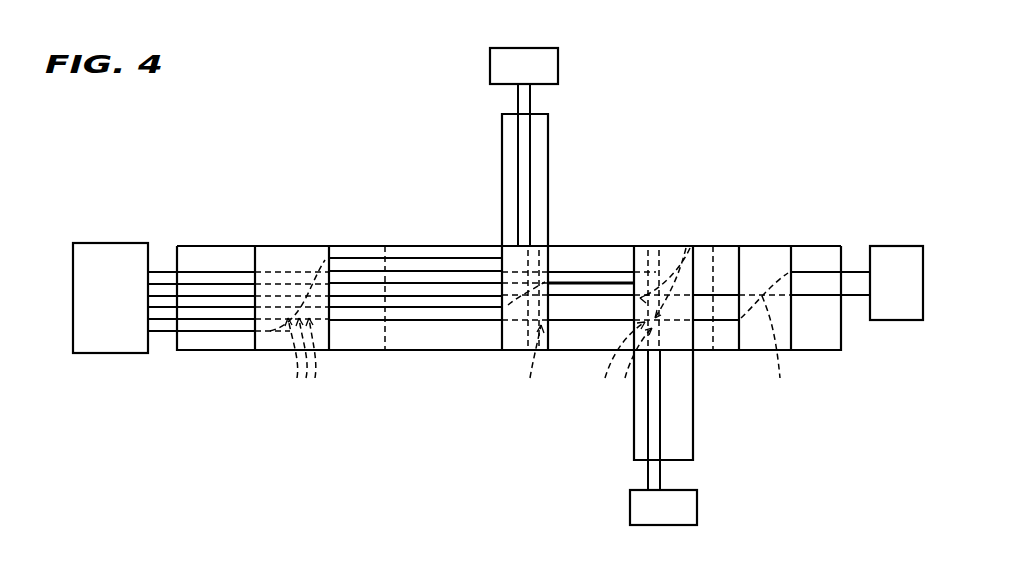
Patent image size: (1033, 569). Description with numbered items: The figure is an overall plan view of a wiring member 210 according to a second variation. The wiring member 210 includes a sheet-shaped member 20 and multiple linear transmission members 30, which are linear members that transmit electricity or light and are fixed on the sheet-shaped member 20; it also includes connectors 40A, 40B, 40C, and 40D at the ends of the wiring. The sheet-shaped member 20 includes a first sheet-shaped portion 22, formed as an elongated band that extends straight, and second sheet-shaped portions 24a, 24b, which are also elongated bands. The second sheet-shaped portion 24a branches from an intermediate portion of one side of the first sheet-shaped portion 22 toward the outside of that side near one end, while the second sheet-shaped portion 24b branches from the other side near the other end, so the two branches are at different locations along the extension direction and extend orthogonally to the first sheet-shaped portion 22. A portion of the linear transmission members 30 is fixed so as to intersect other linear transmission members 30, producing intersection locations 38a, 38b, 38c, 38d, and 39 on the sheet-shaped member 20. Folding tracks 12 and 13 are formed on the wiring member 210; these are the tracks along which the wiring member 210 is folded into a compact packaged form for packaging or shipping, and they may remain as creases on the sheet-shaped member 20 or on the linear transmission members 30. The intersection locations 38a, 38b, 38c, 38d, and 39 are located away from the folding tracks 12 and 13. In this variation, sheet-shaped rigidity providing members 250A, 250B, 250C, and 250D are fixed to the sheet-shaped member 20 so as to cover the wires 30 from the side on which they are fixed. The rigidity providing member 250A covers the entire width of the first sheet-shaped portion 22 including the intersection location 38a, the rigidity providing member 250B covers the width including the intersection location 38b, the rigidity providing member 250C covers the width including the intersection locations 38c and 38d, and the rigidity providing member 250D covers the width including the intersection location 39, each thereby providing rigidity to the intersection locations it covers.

The wiring member 210 is at (383, 87).
The connector 40A is at (152, 242).
The connector 40B is at (558, 65).
The connector 40C is at (697, 508).
The connector 40D is at (897, 321).
The linear transmission member 30 is at (197, 270).
The rigidity providing member 250A is at (282, 252).
The rigidity providing member 250B is at (540, 250).
The rigidity providing member 250C is at (656, 248).
The rigidity providing member 250D is at (768, 256).
The first sheet-shaped portion 22 is at (452, 245).
The sheet-shaped member 20 is at (460, 352).
The folding track 12 is at (386, 333).
The folding track 13 is at (714, 336).
The second sheet-shaped portion 24a is at (548, 143).
The second sheet-shaped portion 24b is at (693, 444).
The intersection location 38a is at (300, 363).
The intersection location 38b is at (528, 367).
The intersection location 38c is at (681, 246).
The intersection location 38d is at (616, 365).
The intersection location 39 is at (777, 352).